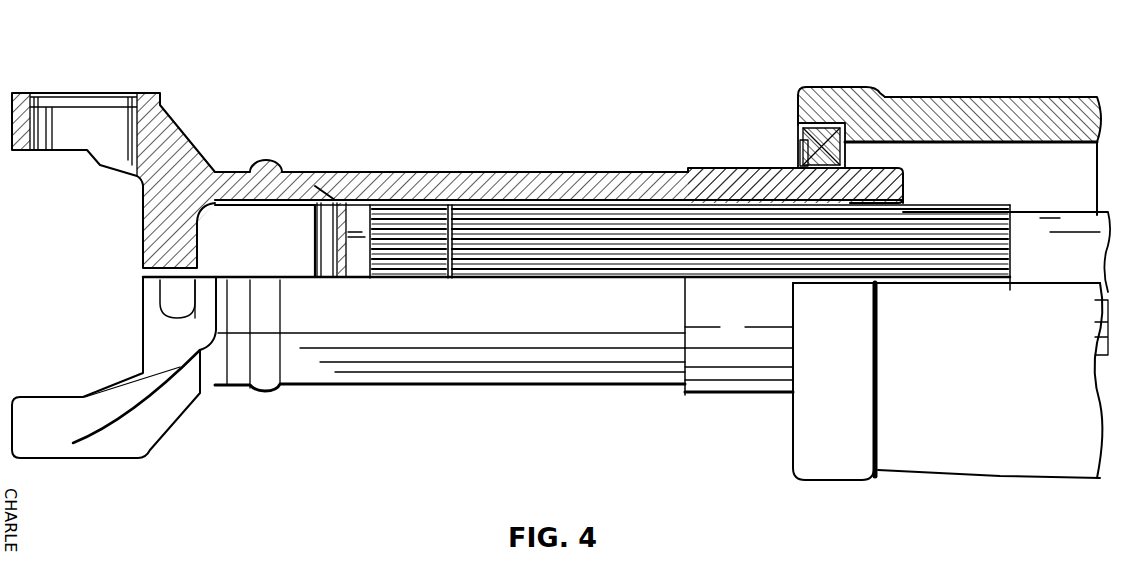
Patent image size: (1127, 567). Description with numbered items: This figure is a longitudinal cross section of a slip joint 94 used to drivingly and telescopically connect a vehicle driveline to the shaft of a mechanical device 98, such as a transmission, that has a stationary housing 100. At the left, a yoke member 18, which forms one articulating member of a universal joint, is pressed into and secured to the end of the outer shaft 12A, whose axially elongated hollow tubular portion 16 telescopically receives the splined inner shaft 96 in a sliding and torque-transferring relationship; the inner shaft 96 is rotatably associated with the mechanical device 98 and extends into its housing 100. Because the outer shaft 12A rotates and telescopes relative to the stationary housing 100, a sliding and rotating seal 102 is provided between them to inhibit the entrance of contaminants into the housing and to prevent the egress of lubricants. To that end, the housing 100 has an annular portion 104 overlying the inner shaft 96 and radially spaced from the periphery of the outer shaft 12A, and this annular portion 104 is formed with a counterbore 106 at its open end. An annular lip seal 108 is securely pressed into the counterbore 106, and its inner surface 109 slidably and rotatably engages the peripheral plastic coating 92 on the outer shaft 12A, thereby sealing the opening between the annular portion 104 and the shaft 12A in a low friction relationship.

The yoke member 18 is at (182, 140).
The outer shaft 12A is at (418, 170).
The slip joint 94 is at (540, 170).
The tubular portion 16 is at (563, 180).
The splined inner shaft 96 is at (607, 213).
The plastic coating 92 is at (700, 170).
The inner surface 109 is at (835, 173).
The sliding and rotating seal 102 is at (793, 132).
The counterbore 106 is at (797, 125).
The annular lip seal 108 is at (800, 140).
The annular portion 104 is at (828, 92).
The stationary housing 100 is at (953, 108).
The mechanical device 98 is at (996, 92).